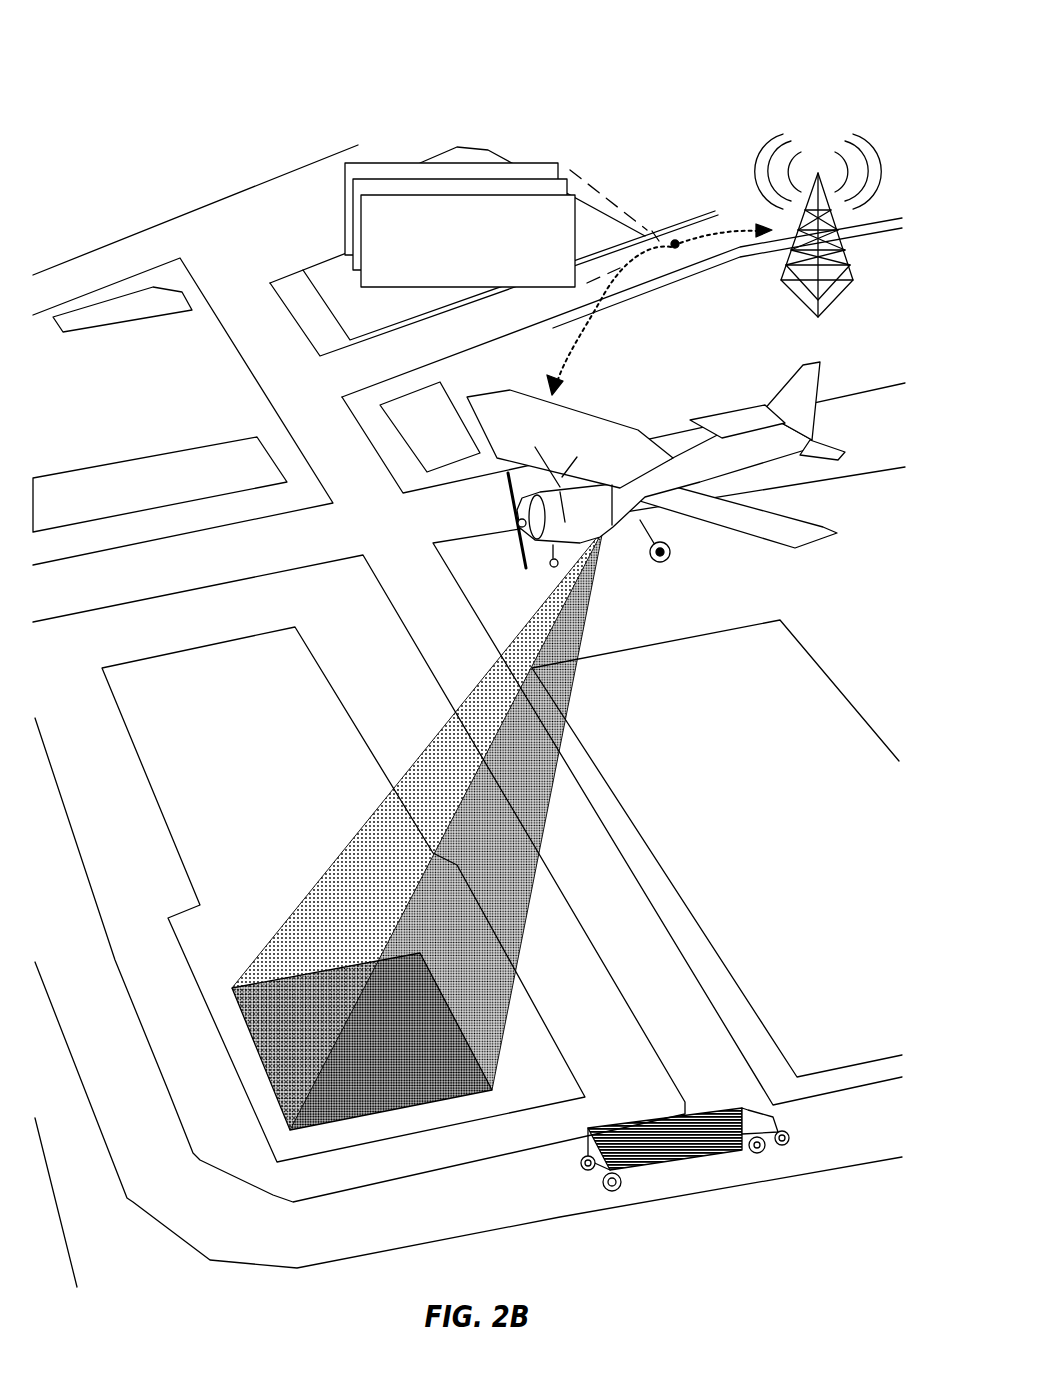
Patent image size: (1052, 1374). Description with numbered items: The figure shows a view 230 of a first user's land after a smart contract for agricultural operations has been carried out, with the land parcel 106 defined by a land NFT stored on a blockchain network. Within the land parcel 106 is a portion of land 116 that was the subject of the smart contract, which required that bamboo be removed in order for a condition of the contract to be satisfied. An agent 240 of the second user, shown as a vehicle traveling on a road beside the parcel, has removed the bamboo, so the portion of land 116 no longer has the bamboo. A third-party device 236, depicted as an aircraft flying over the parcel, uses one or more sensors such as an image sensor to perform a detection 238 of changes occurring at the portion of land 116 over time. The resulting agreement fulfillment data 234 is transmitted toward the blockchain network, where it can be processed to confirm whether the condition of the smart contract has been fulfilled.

The environment with aerial imaging of agreement fulfillment 230 is at (126, 66).
The agreement fulfillment data 234 is at (453, 274).
The third-party device 236 is at (777, 372).
The detection 238 is at (358, 828).
The land parcel 106 is at (270, 729).
The portion of land 116 is at (280, 1113).
The agent 240 is at (600, 1187).